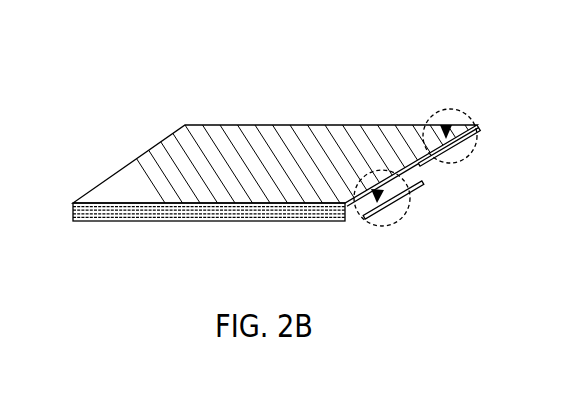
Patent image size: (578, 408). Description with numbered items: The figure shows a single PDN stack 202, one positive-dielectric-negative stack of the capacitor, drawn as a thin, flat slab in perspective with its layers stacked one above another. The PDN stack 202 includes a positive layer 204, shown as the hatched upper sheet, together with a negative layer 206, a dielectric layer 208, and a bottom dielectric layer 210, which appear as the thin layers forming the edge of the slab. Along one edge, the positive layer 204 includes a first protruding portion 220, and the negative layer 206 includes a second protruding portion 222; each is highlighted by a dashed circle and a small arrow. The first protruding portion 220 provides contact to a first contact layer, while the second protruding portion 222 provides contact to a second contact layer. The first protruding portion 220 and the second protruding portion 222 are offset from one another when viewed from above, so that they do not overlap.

The PDN stack 202 is at (97, 75).
The positive layer 204 is at (232, 152).
The negative layer 206 is at (342, 222).
The dielectric layer 208 is at (73, 209).
The bottom dielectric layer 210 is at (142, 221).
The first protruding portion 220 is at (447, 125).
The second protruding portion 222 is at (420, 167).